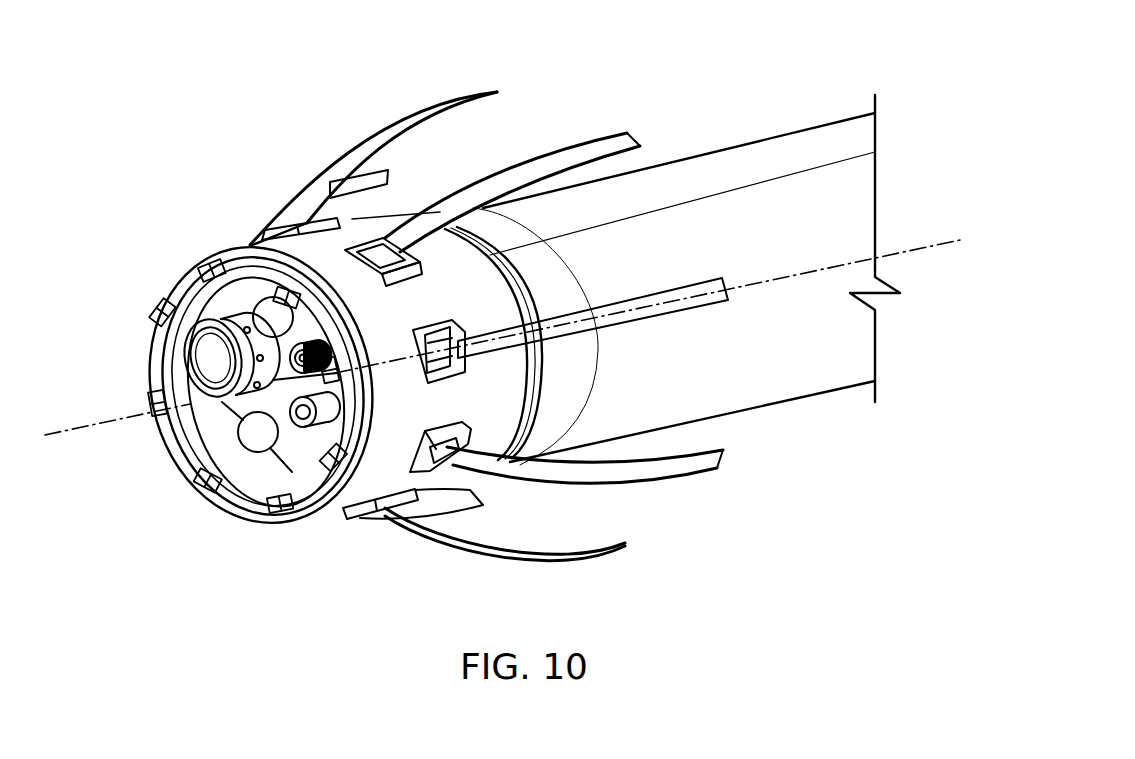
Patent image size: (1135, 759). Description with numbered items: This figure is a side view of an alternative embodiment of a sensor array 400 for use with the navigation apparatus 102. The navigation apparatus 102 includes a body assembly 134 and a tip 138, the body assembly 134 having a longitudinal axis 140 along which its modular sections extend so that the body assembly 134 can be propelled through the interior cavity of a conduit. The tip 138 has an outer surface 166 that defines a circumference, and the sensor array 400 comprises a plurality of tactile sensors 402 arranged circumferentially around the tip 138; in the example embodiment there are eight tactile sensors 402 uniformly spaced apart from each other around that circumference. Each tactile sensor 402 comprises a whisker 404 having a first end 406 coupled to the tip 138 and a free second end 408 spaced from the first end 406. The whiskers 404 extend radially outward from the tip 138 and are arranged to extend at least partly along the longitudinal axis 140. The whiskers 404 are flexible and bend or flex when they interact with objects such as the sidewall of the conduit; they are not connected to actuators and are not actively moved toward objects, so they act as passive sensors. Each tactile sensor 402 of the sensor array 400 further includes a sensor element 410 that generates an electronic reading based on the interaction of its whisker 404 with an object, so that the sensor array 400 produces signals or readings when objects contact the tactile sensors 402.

The navigation apparatus 102 is at (768, 122).
The body assembly 134 is at (710, 198).
The tip 138 is at (250, 240).
The longitudinal axis 140 is at (106, 418).
The outer surface 166 is at (382, 470).
The sensor array 400 is at (268, 200).
The tactile sensors 402 is at (690, 468).
The whiskers 404 is at (452, 100).
The first end 406 is at (375, 228).
The second end 408 is at (613, 132).
The sensor element 410 is at (410, 238).